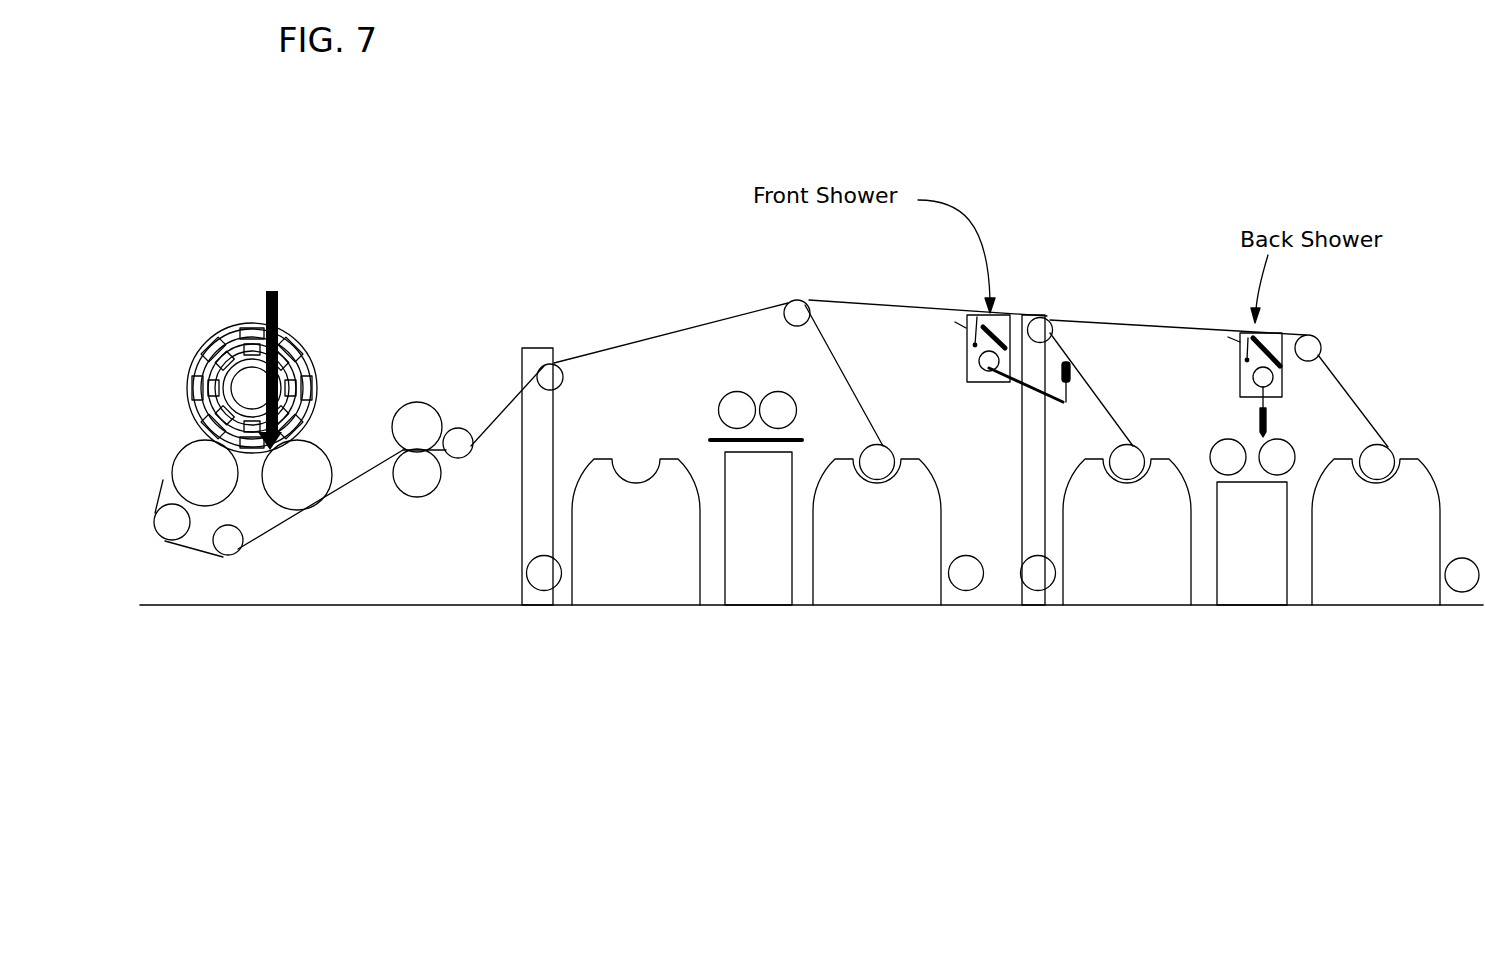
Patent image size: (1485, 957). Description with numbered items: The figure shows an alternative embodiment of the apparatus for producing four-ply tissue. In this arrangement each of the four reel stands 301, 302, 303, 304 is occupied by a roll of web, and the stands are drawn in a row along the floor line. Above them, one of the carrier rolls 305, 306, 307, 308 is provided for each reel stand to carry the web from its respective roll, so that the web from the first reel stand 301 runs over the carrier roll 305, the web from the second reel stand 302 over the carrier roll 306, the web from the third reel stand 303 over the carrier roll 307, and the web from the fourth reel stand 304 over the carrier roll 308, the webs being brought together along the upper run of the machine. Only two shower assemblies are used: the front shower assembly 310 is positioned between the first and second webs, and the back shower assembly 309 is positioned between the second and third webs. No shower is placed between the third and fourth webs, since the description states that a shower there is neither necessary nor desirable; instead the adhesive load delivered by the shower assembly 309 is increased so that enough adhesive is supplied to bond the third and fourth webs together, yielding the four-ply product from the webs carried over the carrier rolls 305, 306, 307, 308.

The reel stand 301 is at (615, 584).
The reel stand 302 is at (853, 584).
The reel stand 303 is at (1101, 584).
The reel stand 304 is at (1361, 584).
The carrier roll 305 is at (563, 377).
The carrier roll 306 is at (803, 301).
The carrier roll 307 is at (1046, 315).
The carrier roll 308 is at (1314, 336).
The shower assembly 309 is at (1233, 380).
The shower assembly 310 is at (960, 373).